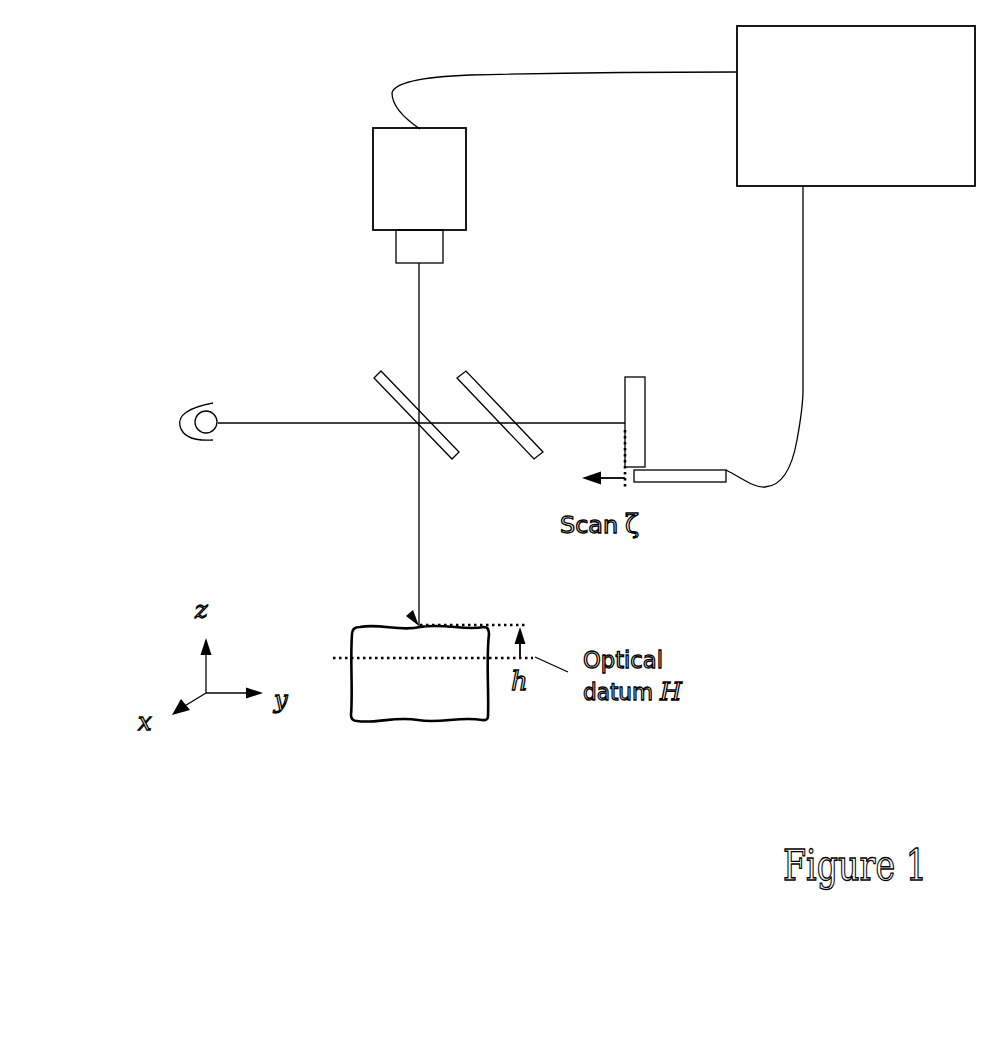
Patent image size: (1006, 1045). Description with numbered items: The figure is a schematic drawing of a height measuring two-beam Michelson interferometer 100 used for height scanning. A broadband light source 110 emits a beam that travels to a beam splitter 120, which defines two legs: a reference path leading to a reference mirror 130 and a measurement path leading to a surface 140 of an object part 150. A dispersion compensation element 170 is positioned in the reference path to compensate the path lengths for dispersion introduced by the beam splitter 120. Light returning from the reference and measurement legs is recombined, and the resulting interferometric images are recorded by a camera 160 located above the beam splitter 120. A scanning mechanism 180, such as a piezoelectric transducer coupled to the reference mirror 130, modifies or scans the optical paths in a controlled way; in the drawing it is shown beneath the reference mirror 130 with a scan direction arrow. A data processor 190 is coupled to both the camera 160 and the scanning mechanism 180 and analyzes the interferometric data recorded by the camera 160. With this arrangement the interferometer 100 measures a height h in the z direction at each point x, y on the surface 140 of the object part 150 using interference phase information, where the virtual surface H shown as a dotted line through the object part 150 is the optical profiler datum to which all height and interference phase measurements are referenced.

The two-beam Michelson interferometer 100 is at (118, 163).
The broadband light source 110 is at (187, 403).
The beam splitter 120 is at (376, 371).
The reference mirror 130 is at (645, 400).
The surface 140 is at (412, 615).
The object part 150 is at (432, 727).
The camera 160 is at (466, 163).
The dispersion compensation element 170 is at (463, 372).
The scanning mechanism 180 is at (713, 490).
The data processor 190 is at (893, 186).